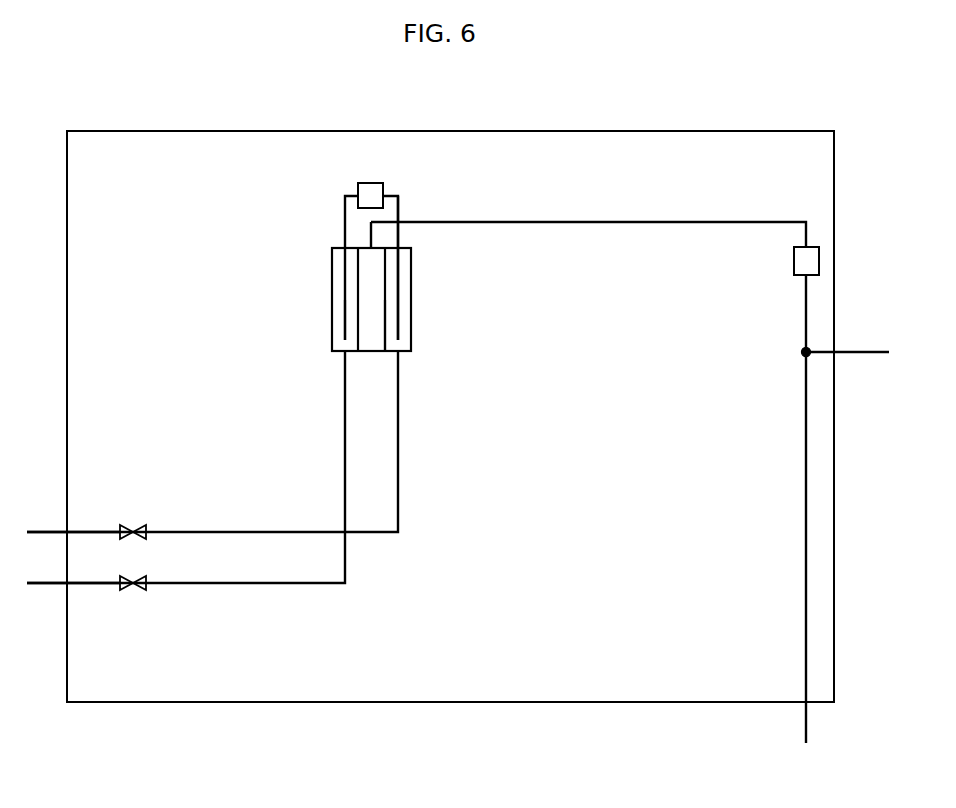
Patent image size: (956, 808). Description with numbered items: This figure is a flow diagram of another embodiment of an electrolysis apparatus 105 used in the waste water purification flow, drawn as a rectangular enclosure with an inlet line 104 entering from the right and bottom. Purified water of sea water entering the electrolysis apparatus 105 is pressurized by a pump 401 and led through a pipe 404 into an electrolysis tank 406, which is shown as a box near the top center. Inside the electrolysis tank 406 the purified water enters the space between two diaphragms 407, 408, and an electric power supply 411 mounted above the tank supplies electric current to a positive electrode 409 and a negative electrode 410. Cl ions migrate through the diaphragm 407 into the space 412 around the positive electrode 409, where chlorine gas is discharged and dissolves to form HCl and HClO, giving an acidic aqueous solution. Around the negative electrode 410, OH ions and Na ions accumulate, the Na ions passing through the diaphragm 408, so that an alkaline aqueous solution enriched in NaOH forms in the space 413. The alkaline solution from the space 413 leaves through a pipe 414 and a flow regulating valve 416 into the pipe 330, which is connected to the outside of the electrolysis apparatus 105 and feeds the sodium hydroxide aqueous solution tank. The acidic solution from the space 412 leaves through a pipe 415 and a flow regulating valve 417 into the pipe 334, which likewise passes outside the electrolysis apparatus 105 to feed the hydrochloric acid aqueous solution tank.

The electrolysis apparatus 105 is at (451, 131).
The exhaust line 104 is at (863, 354).
The pump 401 is at (794, 264).
The pipe 404 is at (589, 222).
The electrolysis tank 406 is at (411, 349).
The diaphragm 407 is at (355, 263).
The diaphragm 408 is at (388, 320).
The positive electrode 409 is at (345, 299).
The negative electrode 410 is at (400, 293).
The electric power supply 411 is at (368, 183).
The space 412 is at (338, 330).
The space 413 is at (405, 266).
The pipe 414 is at (398, 438).
The pipe 415 is at (345, 437).
The flow regulating valve 416 is at (134, 525).
The flow regulating valve 417 is at (135, 590).
The pipe 330 is at (42, 530).
The pipe 334 is at (45, 585).